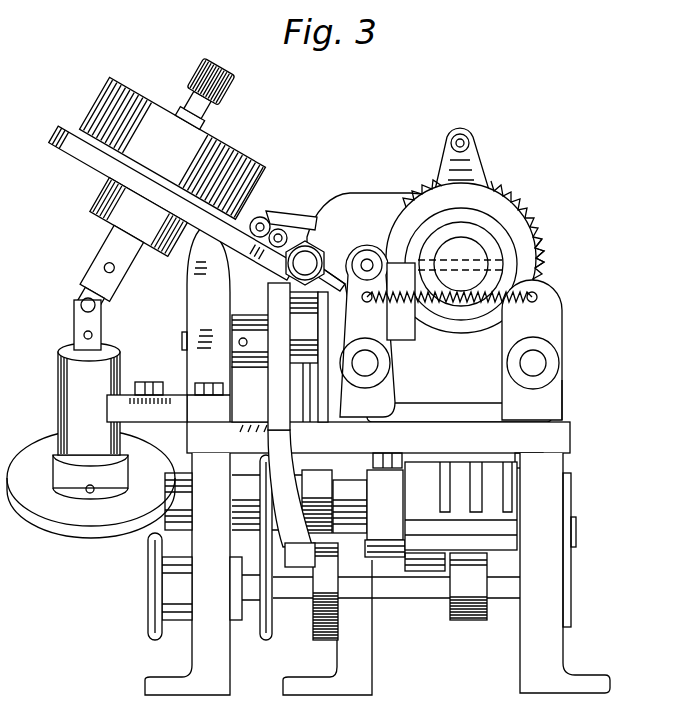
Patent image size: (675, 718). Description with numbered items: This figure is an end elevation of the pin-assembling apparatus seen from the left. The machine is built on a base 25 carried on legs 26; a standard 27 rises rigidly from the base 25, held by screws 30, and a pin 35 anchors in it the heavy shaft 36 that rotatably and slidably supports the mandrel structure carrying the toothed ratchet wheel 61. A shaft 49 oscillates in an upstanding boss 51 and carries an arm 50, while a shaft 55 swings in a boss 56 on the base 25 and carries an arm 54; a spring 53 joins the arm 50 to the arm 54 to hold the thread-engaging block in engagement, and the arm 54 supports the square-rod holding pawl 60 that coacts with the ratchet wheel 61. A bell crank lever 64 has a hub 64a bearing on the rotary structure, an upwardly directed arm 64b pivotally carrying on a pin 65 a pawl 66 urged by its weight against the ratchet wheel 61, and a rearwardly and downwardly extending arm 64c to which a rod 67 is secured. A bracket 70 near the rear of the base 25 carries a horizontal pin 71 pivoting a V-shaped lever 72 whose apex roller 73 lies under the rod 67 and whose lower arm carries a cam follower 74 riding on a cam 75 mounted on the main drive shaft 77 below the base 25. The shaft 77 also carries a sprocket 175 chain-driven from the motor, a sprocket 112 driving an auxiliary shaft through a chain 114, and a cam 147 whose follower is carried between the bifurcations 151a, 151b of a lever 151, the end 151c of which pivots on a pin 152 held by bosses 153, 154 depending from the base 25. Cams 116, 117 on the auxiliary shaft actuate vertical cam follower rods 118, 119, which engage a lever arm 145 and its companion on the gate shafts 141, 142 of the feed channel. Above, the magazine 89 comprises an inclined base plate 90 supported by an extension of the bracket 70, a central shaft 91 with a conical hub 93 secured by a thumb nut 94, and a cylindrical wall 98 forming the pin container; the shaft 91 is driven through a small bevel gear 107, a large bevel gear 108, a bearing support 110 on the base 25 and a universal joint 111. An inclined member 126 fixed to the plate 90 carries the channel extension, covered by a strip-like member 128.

The base 25 is at (560, 437).
The legs 26 is at (157, 683).
The standard 27 is at (459, 409).
The screws 30 is at (531, 458).
The pin 35 is at (505, 266).
The shaft 36 is at (459, 250).
The shaft 49 is at (538, 363).
The arm 50 is at (547, 316).
The boss 51 is at (552, 393).
The spring 53 is at (458, 307).
The arm 54 is at (380, 334).
The shaft 55 is at (368, 363).
The boss 56 is at (387, 396).
The holding pawl 60 is at (367, 259).
The ratchet wheel 61 is at (520, 211).
The bell crank lever 64 is at (539, 236).
The hub 64a is at (535, 258).
The upwardly directed arm 64b is at (477, 156).
The arm 64c is at (363, 198).
The pin 65 is at (472, 135).
The pawl 66 is at (489, 172).
The rod 67 is at (311, 253).
The bracket 70 is at (191, 363).
The horizontal pin 71 is at (182, 341).
The V-shaped lever 72 is at (264, 389).
The roller 73 is at (300, 298).
The cam follower 74 is at (339, 581).
The cam 75 is at (313, 640).
The shaft 77 is at (503, 603).
The magazine 89 is at (95, 91).
The base plate 90 is at (64, 142).
The shaft 91 is at (97, 258).
The hub 93 is at (212, 129).
The thumb nut 94 is at (233, 89).
The cylindrical wall 98 is at (262, 171).
The small bevel gear 107 is at (165, 526).
The large bevel gear 108 is at (48, 530).
The bearing support 110 is at (73, 407).
The universal joint 111 is at (80, 321).
The sprocket 112 is at (263, 598).
The chain 114 is at (258, 538).
The cam 116 is at (321, 492).
The cam 117 is at (311, 482).
The cam follower 118 is at (322, 404).
The cam follower 119 is at (308, 389).
The inclined member 126 is at (240, 251).
The strip-like member 128 is at (281, 547).
The shaft 141 is at (262, 216).
The shaft 142 is at (279, 229).
The lever arm 145 is at (301, 211).
The cam 147 is at (413, 560).
The lever 151 is at (429, 587).
The bifurcation 151a is at (488, 486).
The bifurcation 151b is at (431, 467).
The left-hand end 151c is at (498, 541).
The pin 152 is at (574, 528).
The boss 153 is at (396, 543).
The boss 154 is at (569, 503).
The sprocket 175 is at (153, 641).